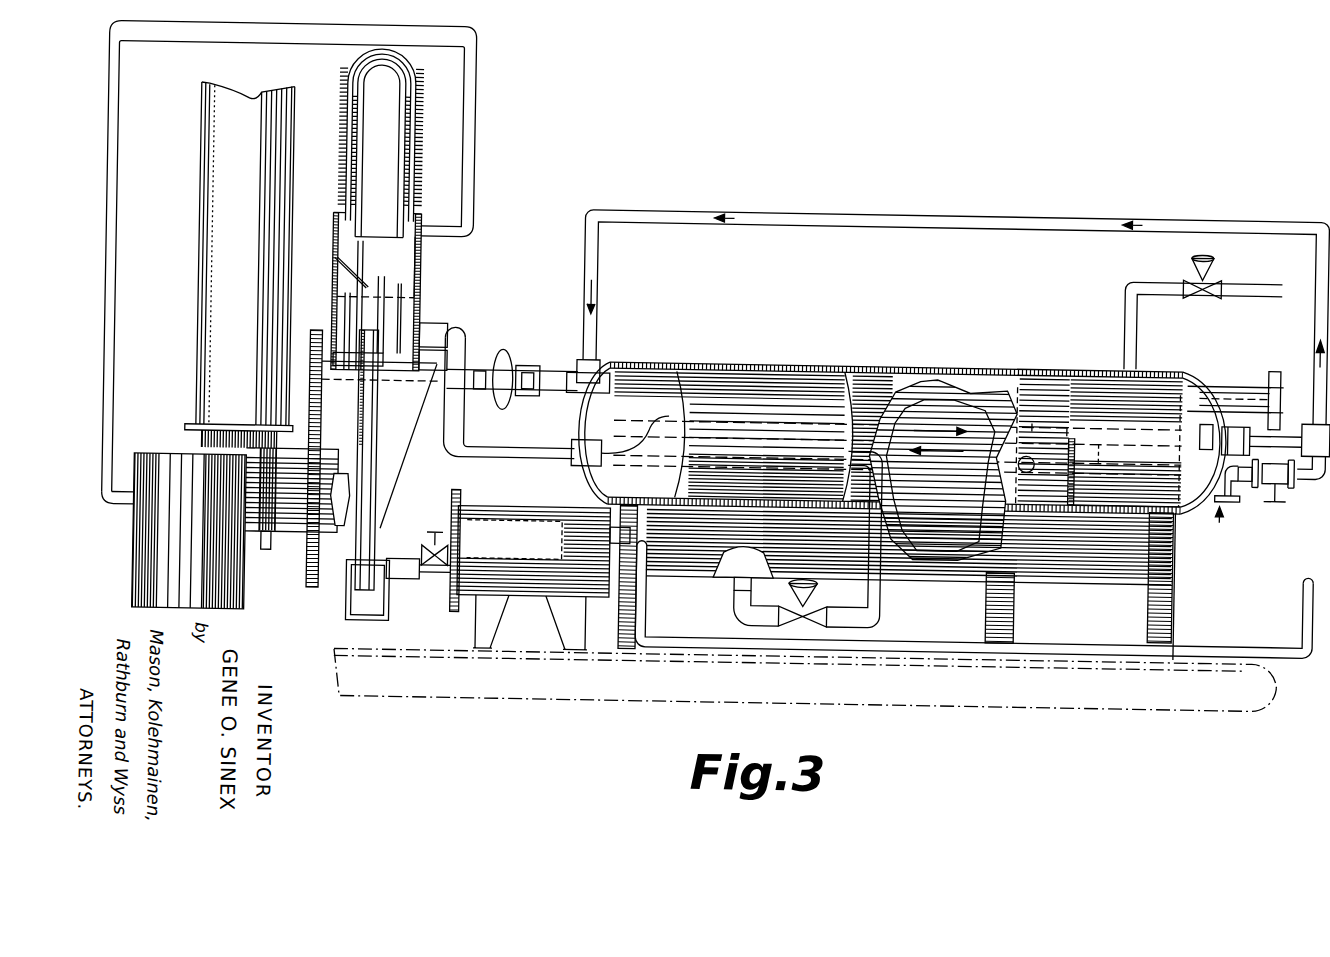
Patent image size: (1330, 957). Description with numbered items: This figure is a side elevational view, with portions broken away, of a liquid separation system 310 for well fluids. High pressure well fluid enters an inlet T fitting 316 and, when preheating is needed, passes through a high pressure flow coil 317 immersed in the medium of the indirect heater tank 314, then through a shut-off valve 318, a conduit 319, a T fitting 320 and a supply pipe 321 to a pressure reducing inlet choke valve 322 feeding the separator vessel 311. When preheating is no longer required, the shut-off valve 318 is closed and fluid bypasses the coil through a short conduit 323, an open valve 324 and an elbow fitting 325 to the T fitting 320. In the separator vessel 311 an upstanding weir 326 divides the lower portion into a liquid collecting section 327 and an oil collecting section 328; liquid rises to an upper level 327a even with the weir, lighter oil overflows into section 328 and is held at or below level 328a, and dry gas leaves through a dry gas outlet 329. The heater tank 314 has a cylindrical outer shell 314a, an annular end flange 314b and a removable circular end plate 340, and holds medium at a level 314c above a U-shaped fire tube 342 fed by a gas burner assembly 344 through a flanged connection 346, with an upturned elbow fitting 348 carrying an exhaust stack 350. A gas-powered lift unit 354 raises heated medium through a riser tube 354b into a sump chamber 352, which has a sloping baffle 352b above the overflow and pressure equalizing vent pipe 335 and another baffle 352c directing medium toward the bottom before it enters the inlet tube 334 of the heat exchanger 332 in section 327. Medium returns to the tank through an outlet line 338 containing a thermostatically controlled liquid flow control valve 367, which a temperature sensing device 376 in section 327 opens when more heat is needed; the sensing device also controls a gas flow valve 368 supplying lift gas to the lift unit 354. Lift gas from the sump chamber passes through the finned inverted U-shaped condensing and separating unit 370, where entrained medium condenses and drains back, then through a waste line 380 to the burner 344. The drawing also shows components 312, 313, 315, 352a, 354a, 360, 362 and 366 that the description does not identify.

The liquid separation system 310 is at (892, 731).
The separator vessel 311 is at (795, 348).
The skid frame 312 is at (547, 706).
The support member 313 is at (1178, 589).
The indirect heater tank 314 is at (1082, 580).
The cylindrical outer shell 314a is at (433, 408).
The annular end flange 314b is at (345, 597).
The liquid level 314c is at (422, 383).
The support leg 315 is at (1018, 618).
The T fitting 316 is at (1234, 495).
The high pressure flow coil 317 is at (963, 457).
The shut-off valve 318 is at (1236, 392).
The conduit 319 is at (1242, 416).
The T fitting 320 is at (1310, 418).
The supply pipe 321 is at (917, 196).
The pressure reducing inlet choke valve 322 is at (527, 342).
The short conduit 323 is at (1236, 480).
The valve 324 is at (1280, 472).
The elbow fitting 325 is at (1292, 472).
The upstanding weir 326 is at (1070, 436).
The liquid collecting section 327 is at (1068, 420).
The upper level 327a is at (1033, 416).
The oil collecting section 328 is at (1135, 455).
The upper level 328a is at (1106, 430).
The dry gas outlet 329 is at (1270, 372).
The heat exchanger 332 is at (616, 475).
The inlet tube 334 is at (492, 453).
The overflow and pressure equalizing vent pipe 335 is at (344, 316).
The outlet line 338 is at (884, 594).
The circular end plate 340 is at (310, 580).
The U-shaped fire tube 342 is at (345, 478).
The gas burner assembly 344 is at (136, 558).
The flanged connection 346 is at (269, 556).
The upturned elbow fitting 348 is at (186, 436).
The exhaust stack 350 is at (197, 204).
The sump chamber 352 is at (330, 228).
The box wall 352a is at (416, 291).
The sloping baffle 352b is at (353, 278).
The baffle 352c is at (415, 264).
The gas-powered lift unit 354 is at (378, 505).
The housing base 354a is at (360, 590).
The riser tube 354b is at (379, 458).
The control valve 360 is at (1183, 273).
The cooler housing 362 is at (534, 600).
The valve 366 is at (425, 572).
The liquid flow control valve 367 is at (818, 610).
The gas flow valve 368 is at (430, 578).
The condensing and separating unit 370 is at (438, 63).
The temperature sensing device 376 is at (1031, 465).
The waste line 380 is at (471, 85).